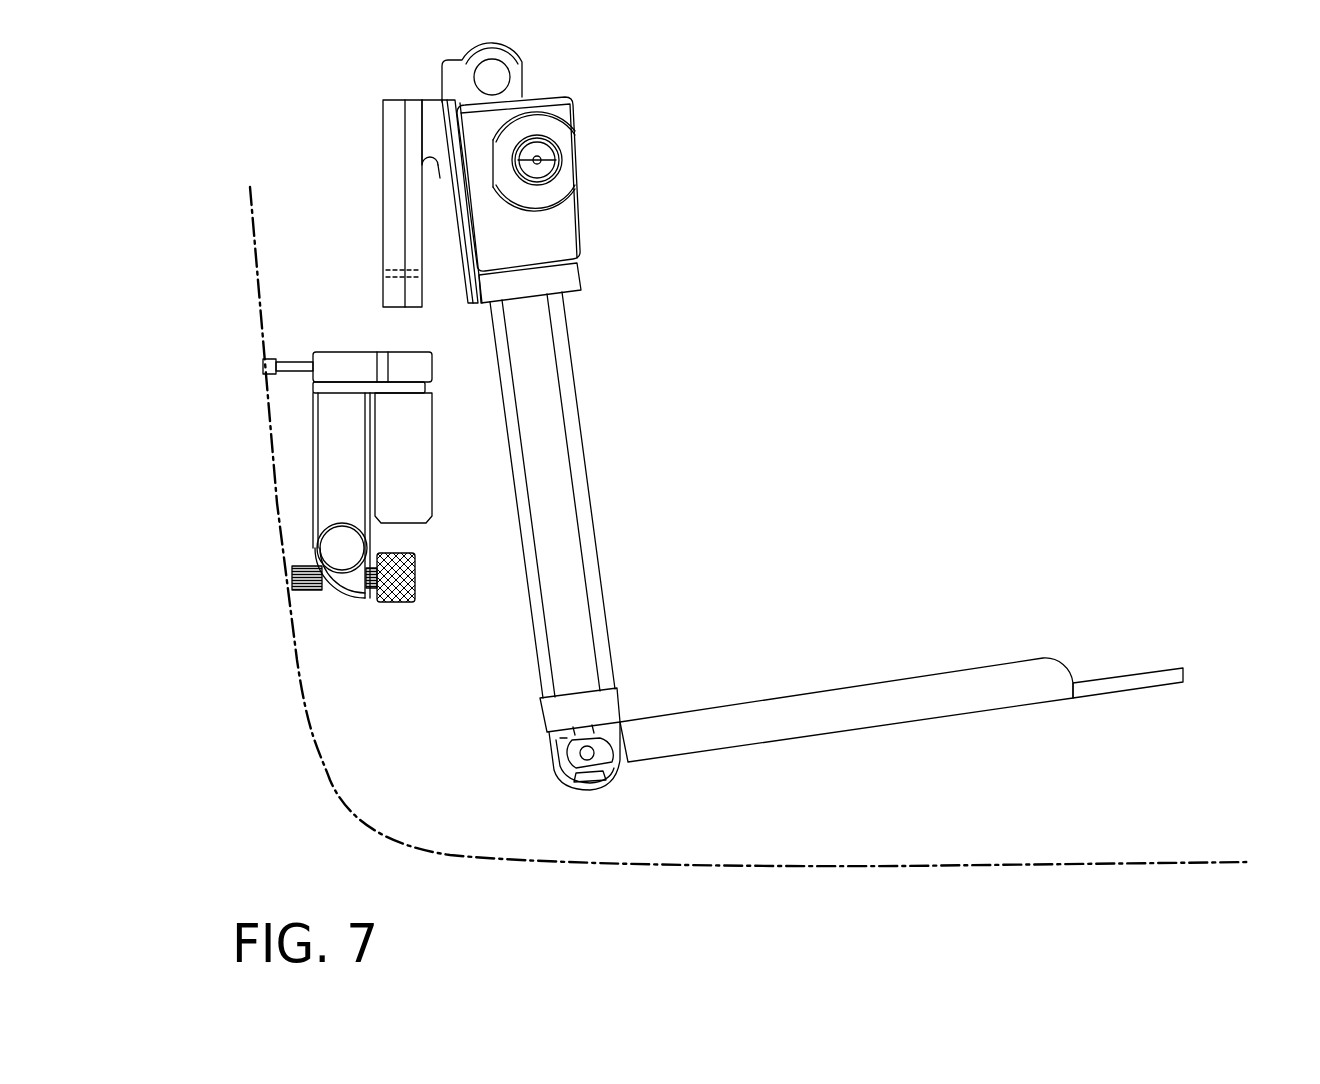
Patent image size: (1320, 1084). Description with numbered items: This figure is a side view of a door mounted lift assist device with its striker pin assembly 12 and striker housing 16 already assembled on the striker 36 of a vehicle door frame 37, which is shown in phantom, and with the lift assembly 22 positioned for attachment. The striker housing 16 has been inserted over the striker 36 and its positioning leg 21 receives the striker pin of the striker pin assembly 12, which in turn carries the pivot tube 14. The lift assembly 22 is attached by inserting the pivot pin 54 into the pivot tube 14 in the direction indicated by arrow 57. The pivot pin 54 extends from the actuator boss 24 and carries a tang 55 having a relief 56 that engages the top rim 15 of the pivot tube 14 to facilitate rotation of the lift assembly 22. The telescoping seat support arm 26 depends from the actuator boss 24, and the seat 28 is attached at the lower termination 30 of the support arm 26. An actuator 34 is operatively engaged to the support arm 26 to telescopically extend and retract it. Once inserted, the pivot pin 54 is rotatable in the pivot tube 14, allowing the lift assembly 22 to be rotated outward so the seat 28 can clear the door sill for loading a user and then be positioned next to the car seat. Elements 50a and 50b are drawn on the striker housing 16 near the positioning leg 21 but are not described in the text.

The striker pin assembly 12 is at (442, 548).
The pivot tube 14 is at (416, 450).
The top rim 15 is at (418, 352).
The striker housing 16 is at (282, 477).
The positioning leg 21 is at (332, 447).
The lift assembly 22 is at (658, 526).
The actuator boss 24 is at (596, 196).
The telescoping seat support arm 26 is at (545, 488).
The seat 28 is at (983, 672).
The lower termination 30 is at (560, 783).
The actuator 34 is at (565, 147).
The striker 36 is at (292, 362).
The door frame 37 is at (323, 758).
The clamp ring 50a is at (333, 549).
The clamp knob 50b is at (393, 604).
The pivot pin 54 is at (393, 202).
The tang 55 is at (435, 110).
The relief 56 is at (437, 188).
The insertion arrow 57 is at (404, 338).